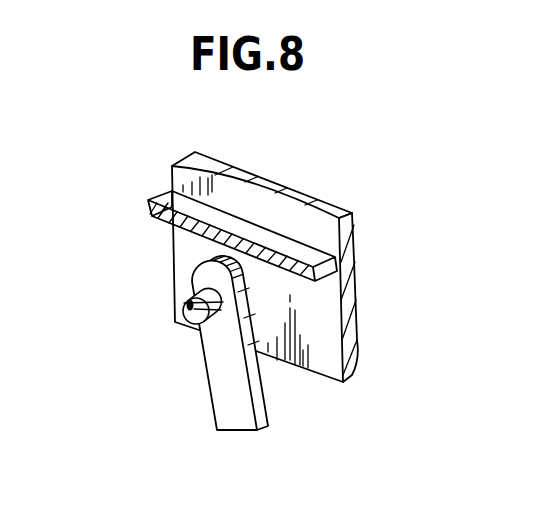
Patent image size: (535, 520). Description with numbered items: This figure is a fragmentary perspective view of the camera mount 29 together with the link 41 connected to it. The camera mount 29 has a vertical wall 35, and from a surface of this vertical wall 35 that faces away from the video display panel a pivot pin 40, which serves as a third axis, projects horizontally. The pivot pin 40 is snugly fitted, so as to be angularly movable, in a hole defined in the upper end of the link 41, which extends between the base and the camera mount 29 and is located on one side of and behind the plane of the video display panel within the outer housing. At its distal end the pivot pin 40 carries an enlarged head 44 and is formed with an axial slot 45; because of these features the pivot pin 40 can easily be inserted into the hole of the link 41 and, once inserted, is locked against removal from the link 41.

The camera mount 29 is at (357, 290).
The vertical wall 35 is at (358, 366).
The pivot pin 40 is at (210, 342).
The link 41 is at (260, 412).
The enlarged head 44 is at (144, 289).
The axial slot 45 is at (194, 331).